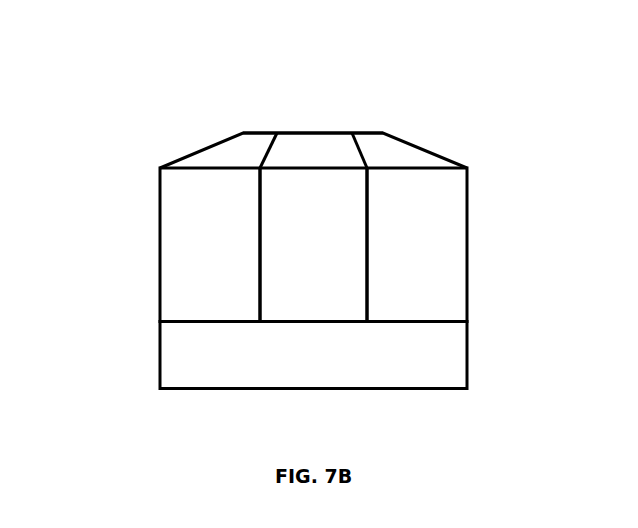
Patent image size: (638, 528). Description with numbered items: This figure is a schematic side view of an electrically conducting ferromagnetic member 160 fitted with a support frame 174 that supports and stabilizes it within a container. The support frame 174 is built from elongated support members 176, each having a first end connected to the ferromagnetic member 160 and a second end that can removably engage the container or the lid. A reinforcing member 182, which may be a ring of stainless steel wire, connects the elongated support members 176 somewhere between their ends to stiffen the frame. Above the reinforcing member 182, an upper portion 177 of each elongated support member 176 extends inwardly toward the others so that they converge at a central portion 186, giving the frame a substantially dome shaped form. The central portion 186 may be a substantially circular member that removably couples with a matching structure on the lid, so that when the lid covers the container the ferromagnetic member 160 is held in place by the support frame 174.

The ferromagnetic member 160 is at (432, 362).
The support frame 174 is at (397, 80).
The elongated support members 176 is at (260, 202).
The upper portion 177 is at (265, 152).
The reinforcing member 182 is at (334, 170).
The central portion 186 is at (295, 133).